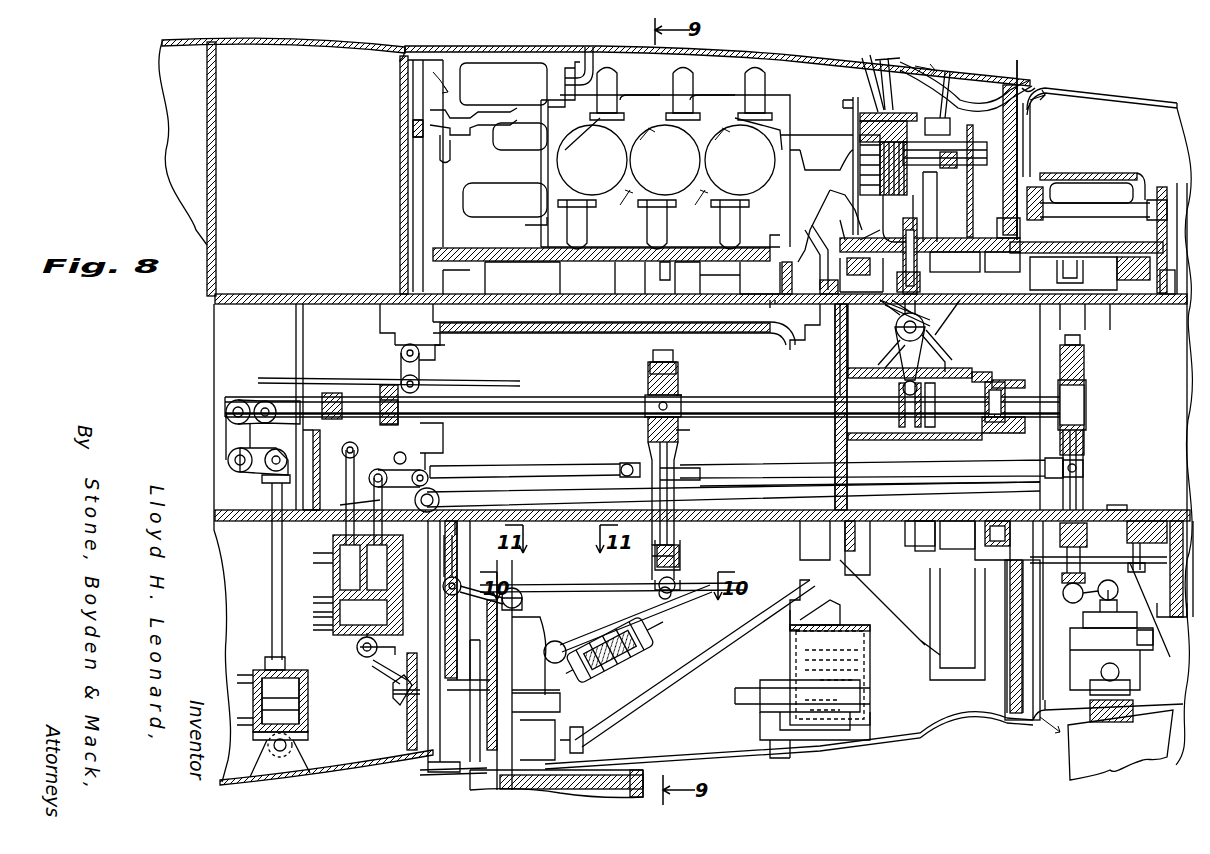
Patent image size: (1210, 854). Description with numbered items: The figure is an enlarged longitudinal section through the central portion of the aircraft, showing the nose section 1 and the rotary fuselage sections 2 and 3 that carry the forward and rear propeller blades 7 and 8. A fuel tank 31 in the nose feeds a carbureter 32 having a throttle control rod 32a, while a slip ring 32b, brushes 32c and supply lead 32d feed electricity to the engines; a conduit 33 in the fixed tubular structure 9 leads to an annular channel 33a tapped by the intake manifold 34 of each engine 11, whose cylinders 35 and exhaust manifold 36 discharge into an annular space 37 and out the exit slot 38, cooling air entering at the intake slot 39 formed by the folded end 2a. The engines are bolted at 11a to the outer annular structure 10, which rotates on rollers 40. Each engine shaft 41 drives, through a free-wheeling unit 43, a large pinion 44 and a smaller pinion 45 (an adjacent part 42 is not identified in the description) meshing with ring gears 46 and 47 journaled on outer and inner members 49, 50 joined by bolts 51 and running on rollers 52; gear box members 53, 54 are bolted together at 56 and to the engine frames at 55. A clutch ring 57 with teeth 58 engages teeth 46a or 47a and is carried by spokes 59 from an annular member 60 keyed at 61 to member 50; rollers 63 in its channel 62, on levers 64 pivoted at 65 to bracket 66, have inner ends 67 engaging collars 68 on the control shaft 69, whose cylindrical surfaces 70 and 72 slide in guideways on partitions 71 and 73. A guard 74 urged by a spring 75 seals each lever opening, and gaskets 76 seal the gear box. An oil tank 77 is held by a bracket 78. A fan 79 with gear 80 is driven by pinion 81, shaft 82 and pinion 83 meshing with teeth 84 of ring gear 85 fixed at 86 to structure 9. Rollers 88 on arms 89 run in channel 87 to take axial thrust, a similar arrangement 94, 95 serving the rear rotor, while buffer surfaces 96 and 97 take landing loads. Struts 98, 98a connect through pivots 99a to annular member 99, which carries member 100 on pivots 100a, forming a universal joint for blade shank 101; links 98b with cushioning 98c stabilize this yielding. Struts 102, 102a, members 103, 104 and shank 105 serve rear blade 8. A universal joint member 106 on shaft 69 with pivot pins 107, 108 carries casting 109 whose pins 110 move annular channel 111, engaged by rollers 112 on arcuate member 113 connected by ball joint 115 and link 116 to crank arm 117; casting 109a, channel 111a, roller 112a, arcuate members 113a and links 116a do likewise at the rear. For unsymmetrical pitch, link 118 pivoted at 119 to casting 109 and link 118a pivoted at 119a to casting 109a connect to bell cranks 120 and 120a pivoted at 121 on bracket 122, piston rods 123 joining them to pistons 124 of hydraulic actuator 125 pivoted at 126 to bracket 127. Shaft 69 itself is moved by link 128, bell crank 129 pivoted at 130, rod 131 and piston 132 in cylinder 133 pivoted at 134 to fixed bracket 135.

The upper hull plate 1 is at (330, 48).
The hull skin 2 is at (780, 62).
The hull wall panel 2a is at (440, 70).
The rear hull skin 3 is at (1124, 96).
The keel plate 7 is at (470, 787).
The rear hull section 8 is at (1070, 765).
The deck 9 is at (262, 308).
The engine mount plate 10 is at (540, 262).
The engine housing 11 is at (790, 95).
The engine housing accessory 11a is at (535, 220).
The forward bulkhead 31 is at (216, 176).
The control lever 32 is at (422, 358).
The control rod 32a is at (345, 372).
The control cylinder 32b is at (420, 195).
The control cylinder 32c is at (420, 162).
The control link 32d is at (404, 718).
The support plate 33 is at (606, 335).
The support bracket 33a is at (771, 411).
The engine bracket 34 is at (690, 245).
The engine cylinder 35 is at (669, 172).
The exhaust pipe 36 is at (628, 90).
The cowl plate 37 is at (970, 95).
The cowl outlet 38 is at (1040, 82).
The hull joint 39 is at (407, 52).
The bracket 40 is at (540, 308).
The clutch housing 41 is at (860, 150).
The clutch shaft 42 is at (955, 112).
The clutch plate 43 is at (866, 70).
The clutch drum 44 is at (893, 60).
The gear 45 is at (935, 165).
The oil tank 46 is at (905, 210).
The oil line 46a is at (842, 200).
The drive shaft housing 47 is at (935, 177).
The shaft housing flange 47a is at (960, 598).
The flywheel 49 is at (1003, 232).
The bearing 50 is at (995, 272).
The bearing 51 is at (1128, 498).
The bearing 52 is at (860, 300).
The clutch sleeve 53 is at (930, 118).
The disc 54 is at (973, 185).
The partition plate 55 is at (850, 105).
The clutch lever 56 is at (949, 84).
The shaft 57 is at (918, 232).
The strut 58 is at (885, 585).
The bearing block 59 is at (900, 265).
The bearing 60 is at (897, 282).
The bearing cap 61 is at (968, 310).
The link 62 is at (932, 322).
The lever 63 is at (887, 319).
The link 64 is at (950, 340).
The fork lever 65 is at (900, 348).
The housing 66 is at (960, 372).
The fork 67 is at (919, 389).
The collar 68 is at (922, 395).
The main shaft 69 is at (508, 398).
The shaft bearing 70 is at (1010, 380).
The bulkhead 71 is at (833, 345).
The shaft bearing 72 is at (360, 419).
The partition 73 is at (312, 380).
The lever pivot 74 is at (895, 345).
The pin 75 is at (945, 322).
The bracket 76 is at (783, 300).
The pump shaft 77 is at (870, 705).
The pump base 78 is at (775, 745).
The rear bulkhead 79 is at (1033, 105).
The tank shaft 80 is at (1095, 230).
The wall 81 is at (1040, 187).
The tank 82 is at (1093, 190).
The tank support 83 is at (1140, 212).
The rear wall 84 is at (1155, 185).
The stern frame 85 is at (1170, 508).
The compartment 86 is at (1116, 330).
The mount bracket 87 is at (535, 290).
The link pin 88 is at (570, 500).
The housing 89 is at (467, 605).
The bearing 94 is at (1000, 518).
The bearing cap 95 is at (975, 518).
The pipe 96 is at (815, 222).
The bearing 97 is at (1168, 300).
The strut 98 is at (688, 655).
The strut post 98a is at (490, 662).
The strut rod 98b is at (670, 615).
The shock absorber 98c is at (615, 655).
The bracket 99 is at (560, 708).
The bracket foot 99a is at (585, 740).
The post 100 is at (535, 675).
The post base 100a is at (546, 738).
The clamp 101 is at (550, 700).
The steering housing 102 is at (1058, 635).
The housing cover 102a is at (1129, 632).
The ball joint 103 is at (1122, 669).
The cap 104 is at (1110, 609).
The rudder post 105 is at (1118, 715).
The lever cap 106 is at (648, 375).
The lever hub 107 is at (648, 420).
The lever arm 108 is at (655, 445).
The lever 109 is at (678, 375).
The lever 109a is at (1085, 450).
The control rod 110 is at (700, 490).
The guide 111 is at (660, 280).
The guide 111a is at (1090, 521).
The guide sleeve 112 is at (694, 561).
The guide sleeve 112a is at (1058, 537).
The block 113 is at (650, 575).
The block 113a is at (1105, 550).
The pin 115 is at (670, 595).
The rod 116 is at (585, 600).
The ball joint 116a is at (1075, 603).
The pivot 117 is at (490, 592).
The link rod 118 is at (550, 470).
The link rod 118a is at (790, 465).
The pin 119 is at (685, 477).
The pin 119a is at (1085, 470).
The rod 120 is at (368, 501).
The rod 120a is at (392, 485).
The bracket 121 is at (460, 445).
The rod 122 is at (480, 490).
The rod 123 is at (346, 500).
The valve block 124 is at (340, 585).
The pivot 125 is at (357, 650).
The link 126 is at (370, 668).
The link end 127 is at (393, 690).
The link 128 is at (252, 392).
The arm 129 is at (228, 436).
The link 130 is at (229, 466).
The rod 131 is at (270, 495).
The cylinder 132 is at (303, 708).
The cylinder base 133 is at (305, 738).
The pivot 134 is at (274, 748).
The bottom plate 135 is at (305, 768).